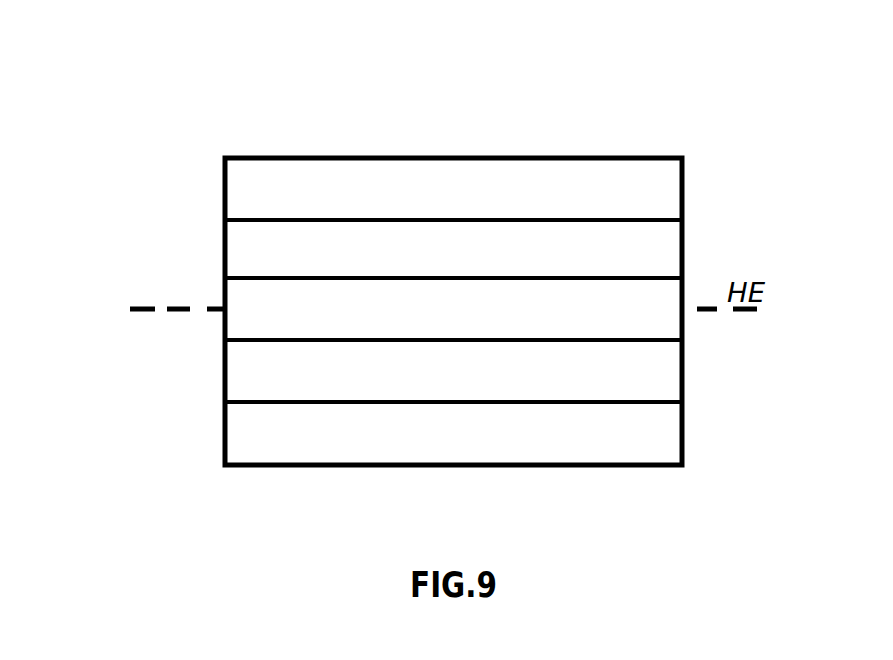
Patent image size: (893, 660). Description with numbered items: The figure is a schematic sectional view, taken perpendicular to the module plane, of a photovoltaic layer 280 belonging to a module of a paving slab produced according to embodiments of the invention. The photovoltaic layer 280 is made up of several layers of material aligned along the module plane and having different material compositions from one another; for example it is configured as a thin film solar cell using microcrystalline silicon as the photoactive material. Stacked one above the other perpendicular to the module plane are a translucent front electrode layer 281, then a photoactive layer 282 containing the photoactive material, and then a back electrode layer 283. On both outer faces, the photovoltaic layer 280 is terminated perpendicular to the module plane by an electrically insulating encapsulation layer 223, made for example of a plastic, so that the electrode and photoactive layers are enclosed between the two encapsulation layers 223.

The photovoltaic layer 280 is at (378, 250).
The encapsulation layer 223 is at (397, 308).
The front electrode layer 281 is at (396, 249).
The photoactive layer 282 is at (396, 303).
The back electrode layer 283 is at (396, 371).